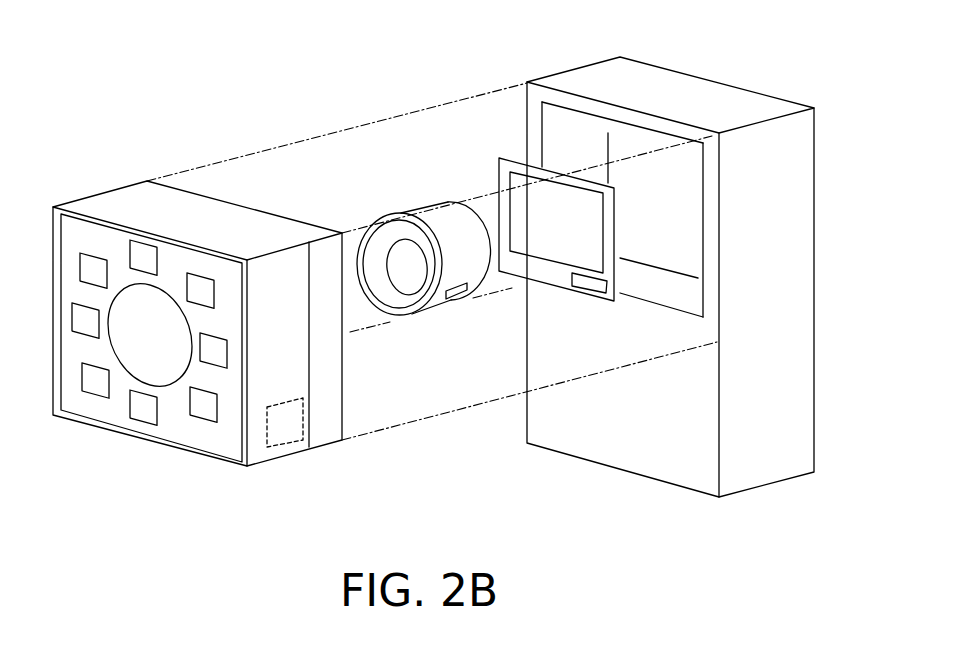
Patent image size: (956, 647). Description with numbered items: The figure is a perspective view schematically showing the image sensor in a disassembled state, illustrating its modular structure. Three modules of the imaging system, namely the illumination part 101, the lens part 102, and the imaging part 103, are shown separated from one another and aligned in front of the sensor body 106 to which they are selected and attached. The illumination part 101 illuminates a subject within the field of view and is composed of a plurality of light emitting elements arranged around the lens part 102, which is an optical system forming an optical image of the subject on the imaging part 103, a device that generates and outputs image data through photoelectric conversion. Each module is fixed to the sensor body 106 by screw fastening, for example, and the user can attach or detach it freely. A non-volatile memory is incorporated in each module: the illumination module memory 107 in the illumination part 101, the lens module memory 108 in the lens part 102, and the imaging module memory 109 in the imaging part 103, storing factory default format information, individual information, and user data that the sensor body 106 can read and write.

The illumination part 101 is at (100, 208).
The lens part 102 is at (412, 207).
The imaging part 103 is at (508, 160).
The sensor body 106 is at (702, 95).
The illumination module memory 107 is at (290, 450).
The lens module memory 108 is at (457, 297).
The imaging module memory 109 is at (588, 283).